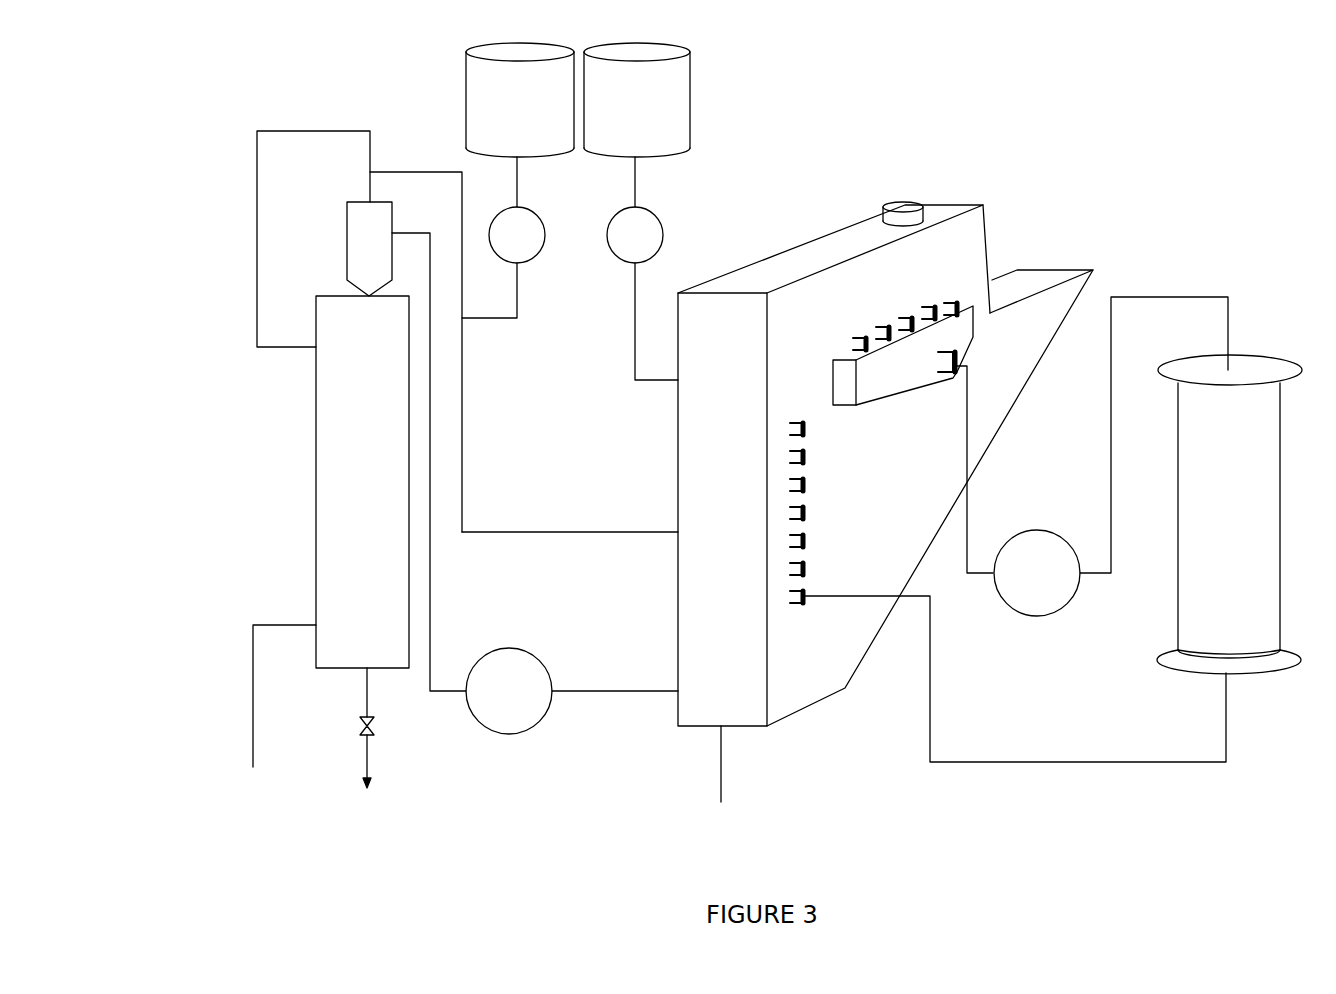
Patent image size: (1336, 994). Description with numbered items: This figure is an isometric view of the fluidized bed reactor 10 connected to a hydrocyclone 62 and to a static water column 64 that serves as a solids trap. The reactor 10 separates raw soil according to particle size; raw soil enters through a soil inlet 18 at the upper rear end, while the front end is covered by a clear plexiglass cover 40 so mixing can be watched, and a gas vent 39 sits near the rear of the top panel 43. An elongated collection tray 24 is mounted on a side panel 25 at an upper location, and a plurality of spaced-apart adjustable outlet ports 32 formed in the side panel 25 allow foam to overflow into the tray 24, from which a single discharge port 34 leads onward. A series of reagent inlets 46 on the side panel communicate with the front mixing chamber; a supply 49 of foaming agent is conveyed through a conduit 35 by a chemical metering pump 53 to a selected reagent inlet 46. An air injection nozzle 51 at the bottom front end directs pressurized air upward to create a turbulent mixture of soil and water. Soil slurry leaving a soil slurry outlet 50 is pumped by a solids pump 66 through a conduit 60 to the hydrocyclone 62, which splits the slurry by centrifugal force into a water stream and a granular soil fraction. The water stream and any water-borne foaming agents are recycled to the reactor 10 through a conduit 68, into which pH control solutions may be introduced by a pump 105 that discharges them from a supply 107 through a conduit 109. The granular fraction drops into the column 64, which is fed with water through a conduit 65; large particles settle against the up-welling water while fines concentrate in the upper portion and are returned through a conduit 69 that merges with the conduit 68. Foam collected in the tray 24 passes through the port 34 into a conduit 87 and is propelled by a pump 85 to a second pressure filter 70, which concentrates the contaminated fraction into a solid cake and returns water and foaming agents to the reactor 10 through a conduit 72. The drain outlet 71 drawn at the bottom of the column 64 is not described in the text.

The fluidized bed reactor 10 is at (1014, 194).
The soil inlet 18 is at (1018, 282).
The collection tray 24 is at (903, 376).
The side panel 25 is at (956, 232).
The outlet ports 32 is at (933, 307).
The discharge port 34 is at (960, 358).
The conduit 35 is at (633, 342).
The gas vent 39 is at (900, 203).
The plexiglass cover 40 is at (719, 459).
The top panel 43 is at (815, 258).
The reagent inlets 46 is at (679, 381).
The supply of foaming agent 49 is at (621, 117).
The soil slurry outlets 50 is at (679, 693).
The air injection nozzle 51 is at (724, 739).
The chemical metering pump 53 is at (622, 249).
The conduit 60 is at (432, 447).
The hydrocyclone 62 is at (355, 266).
The static water column 64 is at (348, 462).
The conduit 65 is at (253, 657).
The solids pump 66 is at (495, 705).
The conduit 68 is at (478, 532).
The conduit 69 is at (257, 262).
The second pressure filter 70 is at (1215, 519).
The drain outlet 71 is at (369, 760).
The conduit 72 is at (1083, 763).
The pump 85 is at (1019, 588).
The conduit 87 is at (1137, 297).
The pump 105 is at (498, 249).
The supply 107 is at (499, 117).
The conduit 109 is at (517, 303).